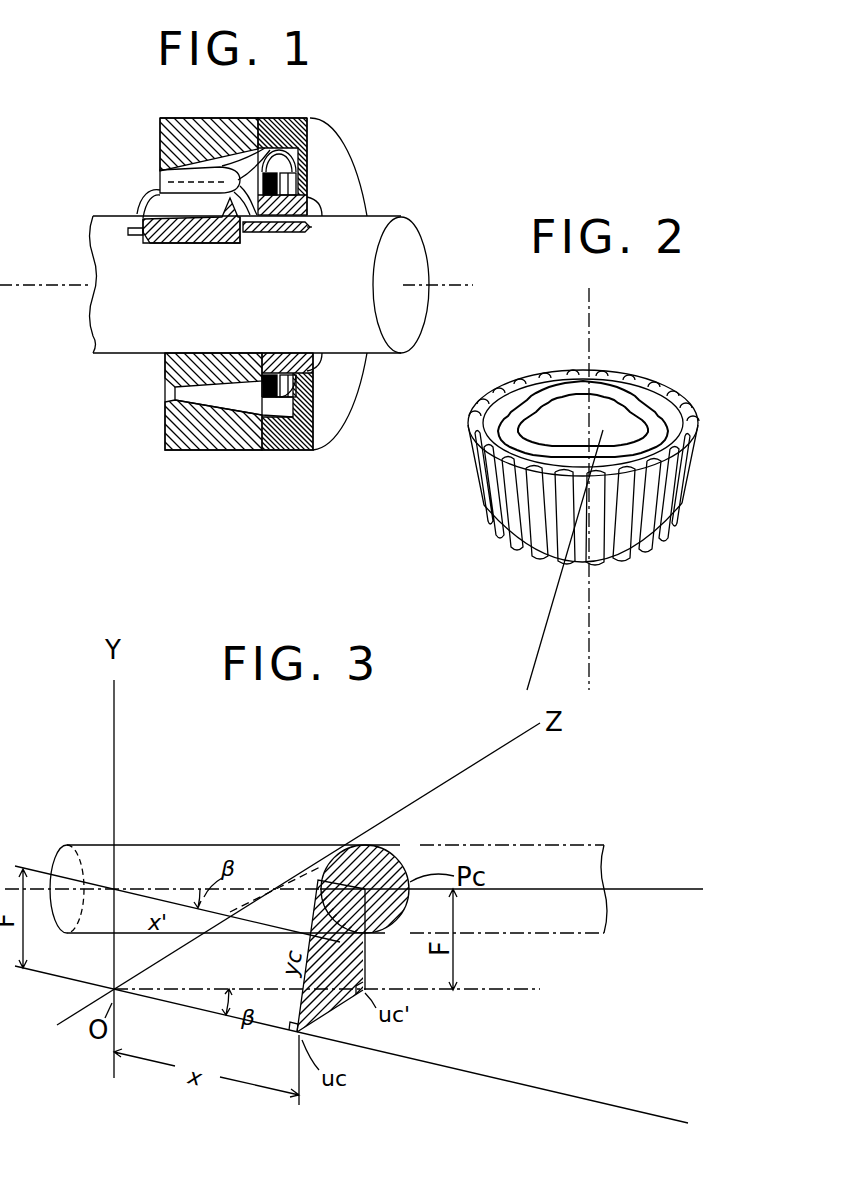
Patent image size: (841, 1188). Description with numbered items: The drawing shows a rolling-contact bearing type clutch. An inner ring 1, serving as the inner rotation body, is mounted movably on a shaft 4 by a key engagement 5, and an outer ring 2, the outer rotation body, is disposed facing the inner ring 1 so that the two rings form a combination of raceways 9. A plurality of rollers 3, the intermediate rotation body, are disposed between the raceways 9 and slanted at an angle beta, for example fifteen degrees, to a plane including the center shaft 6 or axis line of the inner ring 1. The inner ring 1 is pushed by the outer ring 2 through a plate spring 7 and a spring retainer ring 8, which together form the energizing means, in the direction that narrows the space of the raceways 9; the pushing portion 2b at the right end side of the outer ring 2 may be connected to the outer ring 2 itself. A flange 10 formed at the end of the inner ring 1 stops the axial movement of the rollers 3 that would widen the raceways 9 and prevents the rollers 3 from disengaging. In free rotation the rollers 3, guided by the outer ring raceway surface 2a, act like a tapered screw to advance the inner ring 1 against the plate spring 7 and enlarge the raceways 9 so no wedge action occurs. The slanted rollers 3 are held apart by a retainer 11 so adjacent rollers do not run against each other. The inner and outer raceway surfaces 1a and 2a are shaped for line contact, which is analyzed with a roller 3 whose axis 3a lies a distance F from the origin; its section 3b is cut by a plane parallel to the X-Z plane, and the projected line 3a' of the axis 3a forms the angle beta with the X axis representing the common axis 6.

In FIG. 1, the inner ring 1 is at (157, 250).
In FIG. 1, the inner raceway surface 1a is at (203, 248).
In FIG. 1, the outer ring 2 is at (247, 117).
In FIG. 1, the outer ring raceway surface 2a is at (212, 118).
In FIG. 1, the pushing portion 2b is at (293, 118).
In FIG. 1, the roller 3 is at (165, 175).
In FIG. 2, the roller 3 is at (684, 482).
In FIG. 3, the roller 3 is at (247, 845).
In FIG. 3, the roller axis 3a is at (354, 922).
In FIG. 3, the projected line of the roller axis 3a' is at (329, 1019).
In FIG. 3, the section of the roller 3b is at (396, 849).
In FIG. 1, the shaft 4 is at (367, 220).
In FIG. 1, the key engagement 5 is at (273, 240).
In FIG. 1, the center shaft (axis line) 6 is at (45, 290).
In FIG. 2, the center shaft (axis line) 6 is at (591, 310).
In FIG. 3, the center shaft (axis line) 6 is at (563, 1102).
In FIG. 1, the plate spring 7 is at (285, 150).
In FIG. 2, the plate spring 7 is at (600, 376).
In FIG. 1, the spring retainer ring 8 is at (300, 172).
In FIG. 1, the raceways 9 is at (203, 400).
In FIG. 1, the flange 10 is at (143, 198).
In FIG. 2, the retainer 11 is at (508, 542).